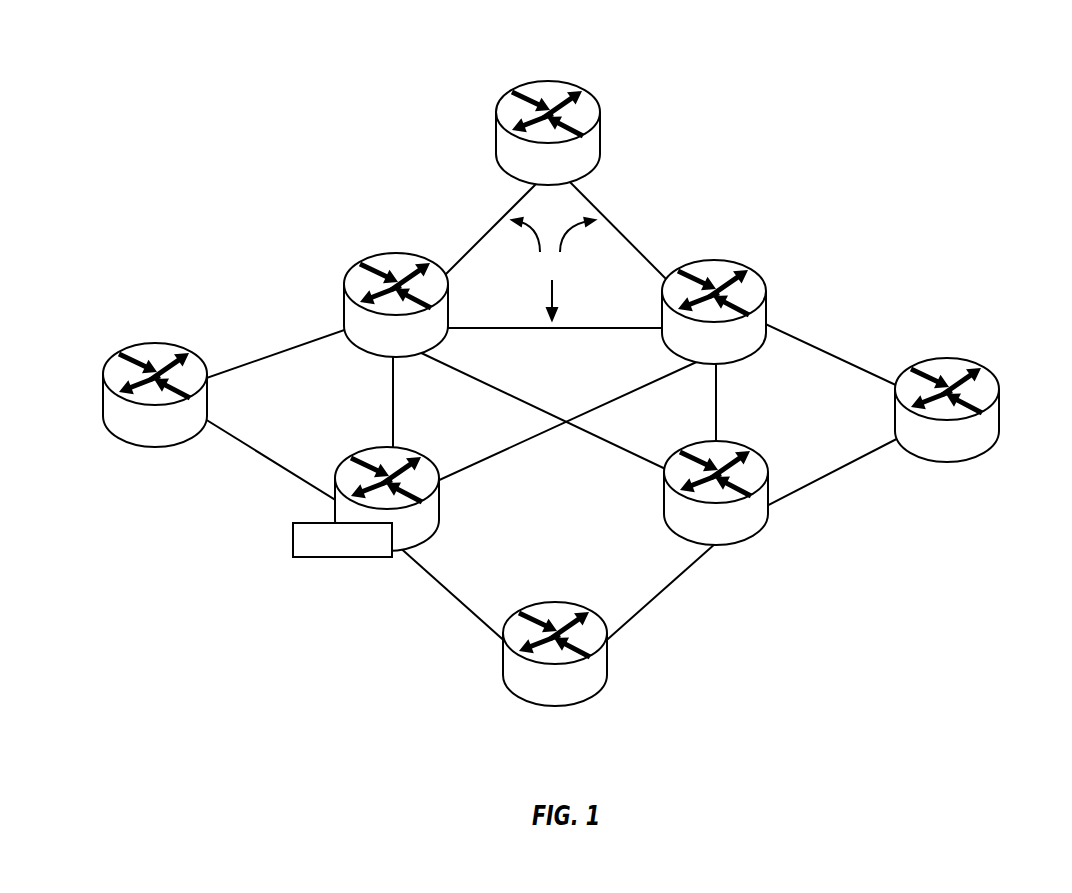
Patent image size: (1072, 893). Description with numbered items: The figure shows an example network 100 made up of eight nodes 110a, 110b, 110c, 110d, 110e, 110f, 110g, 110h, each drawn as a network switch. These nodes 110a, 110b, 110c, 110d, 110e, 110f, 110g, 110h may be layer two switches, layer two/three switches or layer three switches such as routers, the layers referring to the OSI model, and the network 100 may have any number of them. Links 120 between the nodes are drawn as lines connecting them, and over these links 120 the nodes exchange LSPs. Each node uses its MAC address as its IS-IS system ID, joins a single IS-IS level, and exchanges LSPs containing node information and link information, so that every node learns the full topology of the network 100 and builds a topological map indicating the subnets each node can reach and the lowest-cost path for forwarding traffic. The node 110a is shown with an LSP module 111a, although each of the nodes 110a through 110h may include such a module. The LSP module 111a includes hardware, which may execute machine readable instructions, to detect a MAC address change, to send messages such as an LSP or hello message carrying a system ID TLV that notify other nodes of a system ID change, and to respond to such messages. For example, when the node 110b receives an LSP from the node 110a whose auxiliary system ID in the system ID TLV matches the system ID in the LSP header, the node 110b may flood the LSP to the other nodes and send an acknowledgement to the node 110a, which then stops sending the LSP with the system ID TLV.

The network 100 is at (570, 45).
The node 110a is at (439, 497).
The node 110b is at (768, 517).
The node 110c is at (768, 292).
The node 110d is at (345, 292).
The node 110e is at (600, 138).
The node 110f is at (998, 410).
The node 110g is at (608, 670).
The node 110h is at (102, 398).
The LSP module 111a is at (342, 540).
The links 120 is at (553, 269).